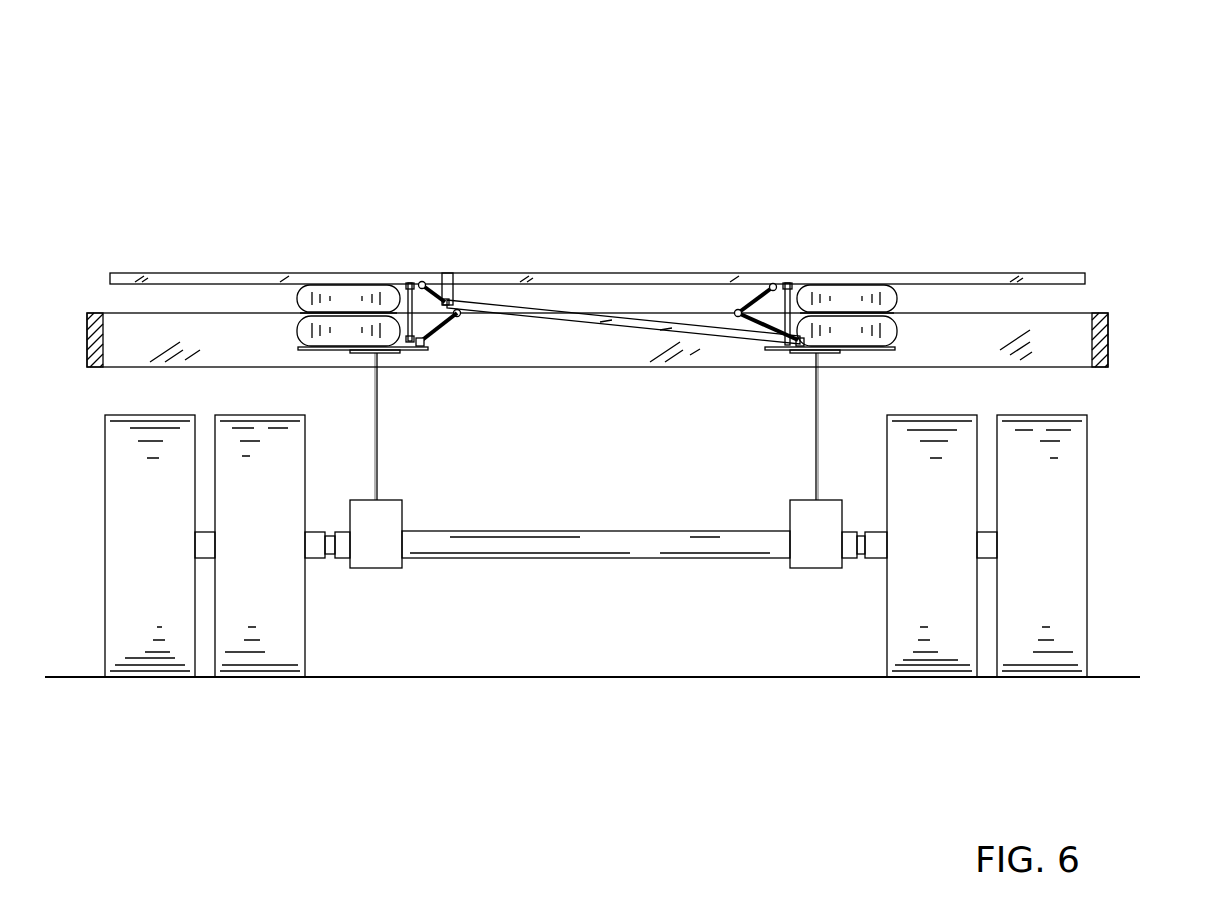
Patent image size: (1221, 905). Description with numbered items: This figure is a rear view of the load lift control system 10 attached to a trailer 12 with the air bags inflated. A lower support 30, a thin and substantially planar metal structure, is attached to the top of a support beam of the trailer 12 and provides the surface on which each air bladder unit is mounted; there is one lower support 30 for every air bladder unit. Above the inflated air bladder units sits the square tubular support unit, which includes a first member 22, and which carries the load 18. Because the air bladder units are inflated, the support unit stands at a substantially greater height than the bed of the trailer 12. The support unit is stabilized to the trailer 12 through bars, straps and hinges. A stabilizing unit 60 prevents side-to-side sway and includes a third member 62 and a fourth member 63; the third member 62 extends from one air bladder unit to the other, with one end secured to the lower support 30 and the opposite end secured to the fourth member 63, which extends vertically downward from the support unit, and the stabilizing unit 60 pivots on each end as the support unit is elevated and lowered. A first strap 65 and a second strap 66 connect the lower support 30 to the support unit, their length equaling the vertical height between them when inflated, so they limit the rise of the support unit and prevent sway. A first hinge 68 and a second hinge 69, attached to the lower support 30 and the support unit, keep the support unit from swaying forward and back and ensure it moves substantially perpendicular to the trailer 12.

The load lift control system 10 is at (148, 166).
The trailer 12 is at (1072, 322).
The load 18 is at (1072, 582).
The first member 22 is at (477, 277).
The lower support 30 is at (268, 264).
The stabilizing unit 60 is at (650, 345).
The third member 62 is at (745, 337).
The fourth member 63 is at (446, 298).
The first strap 65 is at (425, 330).
The second strap 66 is at (758, 300).
The first hinge 68 is at (458, 316).
The second hinge 69 is at (736, 310).